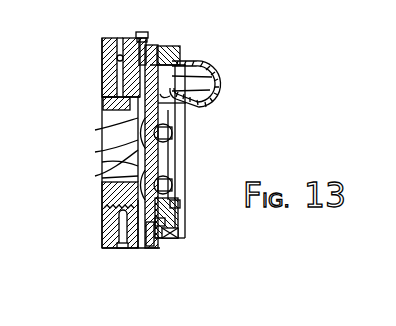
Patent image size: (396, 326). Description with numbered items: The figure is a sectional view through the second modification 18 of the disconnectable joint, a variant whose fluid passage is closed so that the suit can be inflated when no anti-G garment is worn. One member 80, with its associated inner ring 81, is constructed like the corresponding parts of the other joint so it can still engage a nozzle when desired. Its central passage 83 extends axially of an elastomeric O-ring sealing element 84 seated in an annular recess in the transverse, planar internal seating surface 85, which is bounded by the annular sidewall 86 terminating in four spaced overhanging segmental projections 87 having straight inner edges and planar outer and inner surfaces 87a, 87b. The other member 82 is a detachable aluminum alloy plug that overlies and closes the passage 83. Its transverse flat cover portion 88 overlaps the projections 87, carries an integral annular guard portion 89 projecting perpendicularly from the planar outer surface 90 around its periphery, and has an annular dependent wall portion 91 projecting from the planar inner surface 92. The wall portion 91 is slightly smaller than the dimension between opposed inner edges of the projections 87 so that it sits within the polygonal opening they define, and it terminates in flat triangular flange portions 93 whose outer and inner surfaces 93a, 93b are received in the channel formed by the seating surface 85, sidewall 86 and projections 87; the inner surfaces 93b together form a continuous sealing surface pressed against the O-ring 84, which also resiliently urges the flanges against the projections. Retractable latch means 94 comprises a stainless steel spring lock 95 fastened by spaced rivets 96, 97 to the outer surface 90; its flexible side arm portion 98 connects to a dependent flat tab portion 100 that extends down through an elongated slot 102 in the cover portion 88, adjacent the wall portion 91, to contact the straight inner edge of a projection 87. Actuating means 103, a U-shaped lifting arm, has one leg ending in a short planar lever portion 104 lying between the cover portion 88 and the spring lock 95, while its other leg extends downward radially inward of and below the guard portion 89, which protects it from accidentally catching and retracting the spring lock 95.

The second modification of the disconnectable joint 18 is at (254, 139).
The one member 80 is at (127, 261).
The inner ring 81 is at (101, 240).
The other member 82 is at (186, 171).
The central passage 83 is at (110, 146).
The elastomeric O-ring sealing element 84 is at (118, 212).
The internal seating surface 85 is at (125, 160).
The annular sidewall 86 is at (133, 251).
The segmental projections 87 is at (152, 50).
The outer surface of segmental projection 87a is at (163, 228).
The inner surface of segmental projection 87b is at (143, 58).
The cover portion 88 is at (120, 174).
The annular guard portion 89 is at (180, 240).
The planar outer surface 90 is at (160, 152).
The annular dependent wall portion 91 is at (104, 90).
The planar inner surface 92 is at (103, 124).
The flange portions 93 is at (120, 250).
The outer surface of flange portion 93a is at (172, 218).
The inner surface of flange portion 93b is at (102, 68).
The retractable latch means 94 is at (228, 66).
The spring lock 95 is at (205, 93).
The rivet 96 is at (173, 134).
The rivet 97 is at (173, 183).
The side arm portion 98 is at (200, 107).
The tab portion 100 is at (172, 62).
The elongated slot 102 is at (212, 78).
The actuating means 103 is at (226, 61).
The lever portion 104 is at (104, 102).